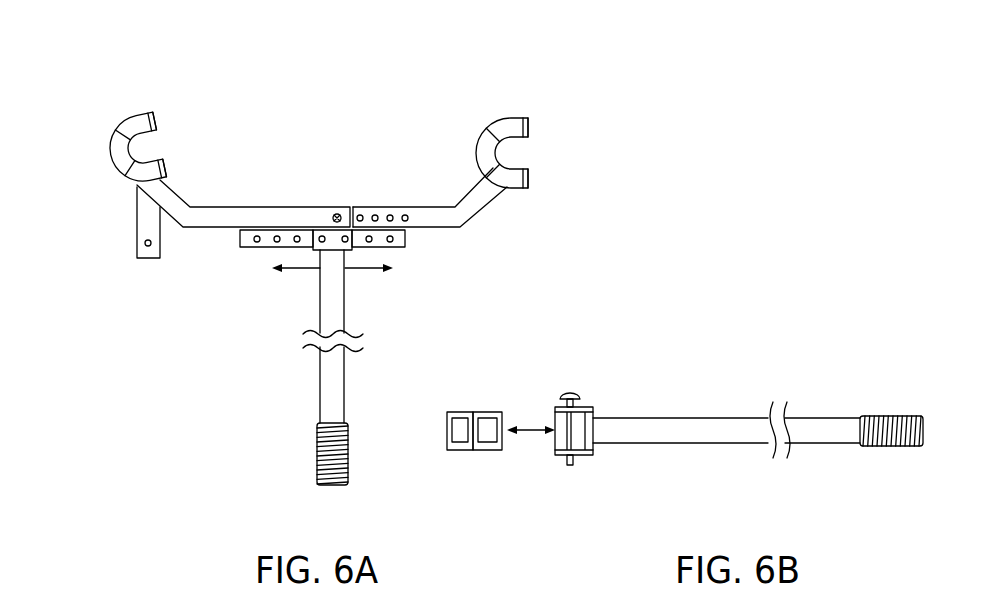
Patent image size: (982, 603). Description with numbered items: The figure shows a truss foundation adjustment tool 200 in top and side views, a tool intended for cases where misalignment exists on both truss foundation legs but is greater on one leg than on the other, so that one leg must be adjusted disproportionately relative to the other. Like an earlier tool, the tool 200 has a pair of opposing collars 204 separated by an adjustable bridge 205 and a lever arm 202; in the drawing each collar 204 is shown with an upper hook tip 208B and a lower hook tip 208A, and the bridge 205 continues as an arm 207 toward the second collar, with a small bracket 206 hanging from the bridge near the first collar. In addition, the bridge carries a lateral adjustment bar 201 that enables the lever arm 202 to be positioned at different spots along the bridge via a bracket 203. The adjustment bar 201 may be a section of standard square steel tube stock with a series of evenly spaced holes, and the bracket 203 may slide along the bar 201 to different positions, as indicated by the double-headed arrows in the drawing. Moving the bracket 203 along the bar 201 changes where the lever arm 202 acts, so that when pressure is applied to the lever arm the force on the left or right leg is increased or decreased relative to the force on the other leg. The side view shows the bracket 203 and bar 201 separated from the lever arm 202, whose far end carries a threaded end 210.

In FIG. 6A, the truss foundation adjustment tool 200 is at (242, 110).
In FIG. 6A, the lateral adjustment bar 201 is at (245, 248).
In FIG. 6B, the lateral adjustment bar 201 is at (485, 412).
In FIG. 6A, the lever arm 202 is at (345, 383).
In FIG. 6B, the lever arm 202 is at (723, 370).
In FIG. 6A, the bracket 203 is at (350, 248).
In FIG. 6B, the bracket 203 is at (591, 397).
In FIG. 6A, the collar 204 is at (112, 160).
In FIG. 6A, the adjustable bridge 205 is at (310, 208).
In FIG. 6B, the adjustable bridge 205 is at (460, 452).
In FIG. 6A, the bracket 206 is at (137, 233).
In FIG. 6A, the arm 207 is at (455, 205).
In FIG. 6A, the lower hook tip 208A is at (173, 167).
In FIG. 6A, the upper hook tip 208B is at (147, 110).
In FIG. 6A, the threaded end 210 is at (348, 463).
In FIG. 6B, the threaded end 210 is at (893, 416).